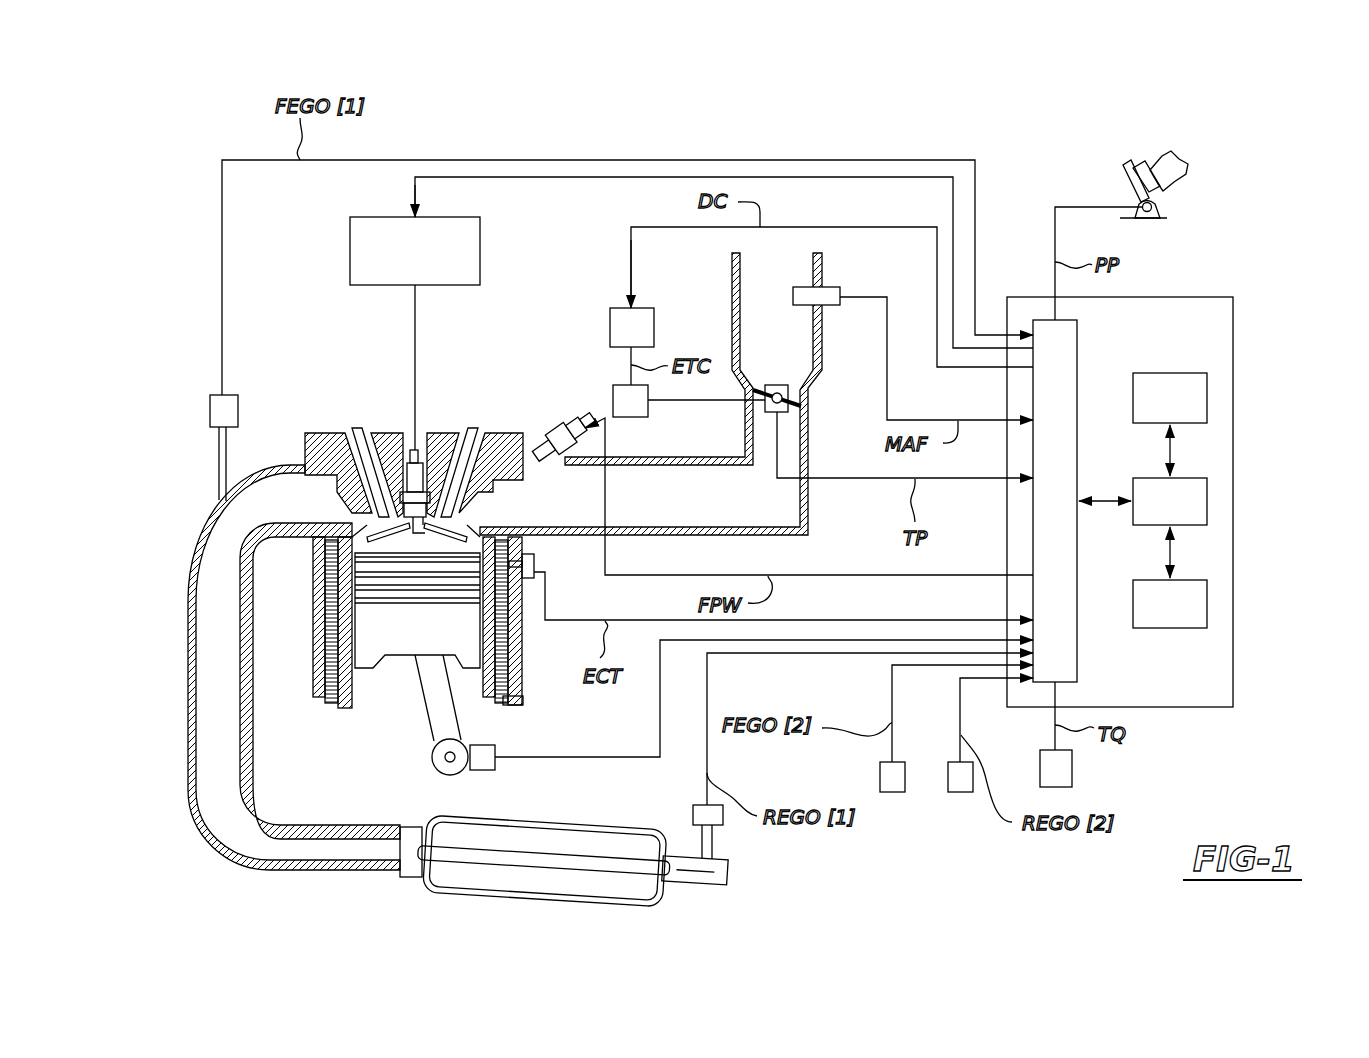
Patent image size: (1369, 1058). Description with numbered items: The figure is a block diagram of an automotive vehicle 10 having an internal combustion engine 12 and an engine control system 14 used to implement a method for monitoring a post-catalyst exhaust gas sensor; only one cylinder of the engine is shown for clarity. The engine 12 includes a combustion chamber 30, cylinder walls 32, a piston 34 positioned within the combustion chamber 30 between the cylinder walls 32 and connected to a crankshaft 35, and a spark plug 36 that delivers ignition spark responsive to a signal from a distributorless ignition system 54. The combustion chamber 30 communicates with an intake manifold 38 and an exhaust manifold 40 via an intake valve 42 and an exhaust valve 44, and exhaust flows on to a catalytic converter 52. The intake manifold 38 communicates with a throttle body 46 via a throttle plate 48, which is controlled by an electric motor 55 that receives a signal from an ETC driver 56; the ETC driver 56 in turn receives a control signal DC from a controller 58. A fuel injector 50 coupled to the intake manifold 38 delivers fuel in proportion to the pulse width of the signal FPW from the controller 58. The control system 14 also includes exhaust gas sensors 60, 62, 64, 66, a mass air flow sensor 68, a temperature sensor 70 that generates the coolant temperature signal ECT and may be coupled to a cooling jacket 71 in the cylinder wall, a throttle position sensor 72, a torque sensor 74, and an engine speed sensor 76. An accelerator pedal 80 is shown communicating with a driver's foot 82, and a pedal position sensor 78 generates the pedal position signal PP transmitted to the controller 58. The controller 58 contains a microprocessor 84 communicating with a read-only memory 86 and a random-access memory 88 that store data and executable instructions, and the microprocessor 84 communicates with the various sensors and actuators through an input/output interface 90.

The automotive vehicle 10 is at (1052, 136).
The internal combustion engine 12 is at (305, 702).
The engine control system 14 is at (1243, 398).
The combustion chamber 30 is at (392, 550).
The cylinder walls 32 is at (356, 698).
The piston 34 is at (427, 641).
The crankshaft 35 is at (432, 758).
The spark plug 36 is at (417, 470).
The intake manifold 38 is at (706, 511).
The exhaust manifold 40 is at (218, 547).
The intake valve 42 is at (467, 512).
The exhaust valve 44 is at (370, 514).
The throttle body 46 is at (733, 317).
The throttle plate 48 is at (757, 388).
The fuel injector 50 is at (553, 431).
The catalytic converter 52 is at (633, 828).
The distributorless ignition system 54 is at (480, 250).
The electric motor 55 is at (613, 400).
The ETC driver 56 is at (610, 326).
The controller 58 is at (1207, 707).
The exhaust gas sensor 60 is at (210, 410).
The exhaust gas sensor 62 is at (892, 792).
The exhaust gas sensor 64 is at (723, 815).
The exhaust gas sensor 66 is at (960, 792).
The mass air flow sensor 68 is at (800, 297).
The temperature sensor 70 is at (534, 560).
The cooling jacket 71 is at (523, 700).
The throttle position sensor 72 is at (790, 400).
The torque sensor 74 is at (1072, 768).
The engine speed sensor 76 is at (483, 770).
The pedal position sensor 78 is at (1160, 210).
The accelerator pedal 80 is at (1133, 185).
The driver's foot 82 is at (1175, 172).
The microprocessor 84 is at (1207, 501).
The read-only memory 86 is at (1170, 374).
The random-access memory 88 is at (1207, 605).
The input/output interface 90 is at (1077, 345).